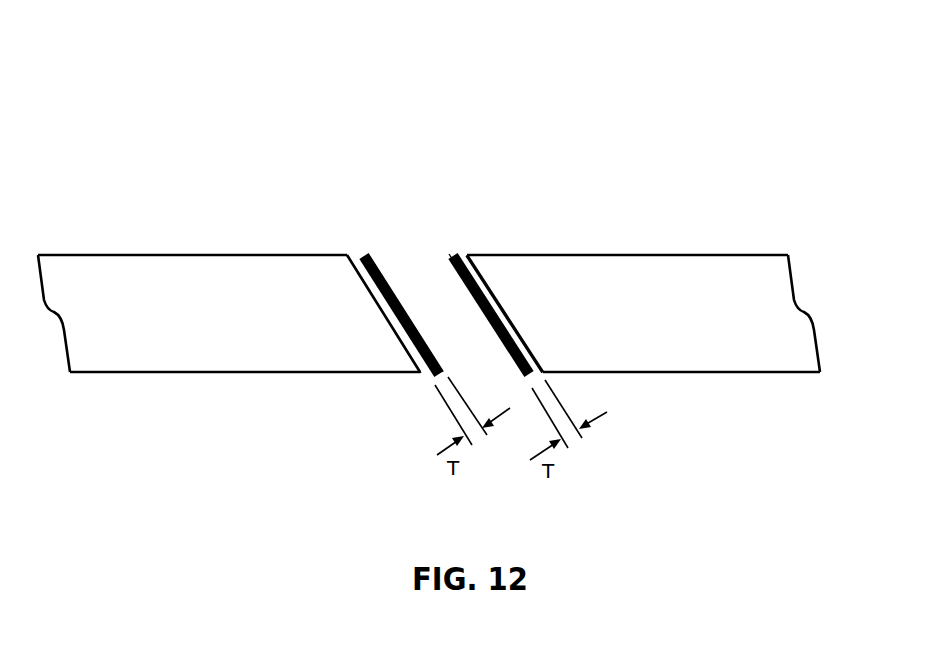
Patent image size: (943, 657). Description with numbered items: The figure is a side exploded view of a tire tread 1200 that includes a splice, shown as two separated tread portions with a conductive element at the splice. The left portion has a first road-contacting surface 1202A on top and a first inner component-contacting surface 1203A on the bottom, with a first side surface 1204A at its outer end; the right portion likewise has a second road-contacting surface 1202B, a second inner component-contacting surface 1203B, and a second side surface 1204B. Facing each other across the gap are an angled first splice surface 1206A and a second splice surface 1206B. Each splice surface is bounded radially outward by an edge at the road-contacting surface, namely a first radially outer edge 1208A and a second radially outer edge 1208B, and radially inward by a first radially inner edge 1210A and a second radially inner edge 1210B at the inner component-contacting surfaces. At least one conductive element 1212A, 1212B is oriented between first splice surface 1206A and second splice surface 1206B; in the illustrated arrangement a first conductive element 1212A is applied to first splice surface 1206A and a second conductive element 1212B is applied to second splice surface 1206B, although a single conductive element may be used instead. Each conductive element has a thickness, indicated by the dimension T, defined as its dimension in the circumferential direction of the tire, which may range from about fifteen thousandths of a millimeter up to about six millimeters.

The tire tread 1200 is at (693, 95).
The first road-contacting surface 1202A is at (187, 255).
The second road-contacting surface 1202B is at (715, 258).
The first inner component-contacting surface 1203A is at (180, 373).
The second inner component-contacting surface 1203B is at (770, 373).
The first side surface 1204A is at (92, 287).
The second side surface 1204B is at (628, 287).
The first splice surface 1206A is at (393, 335).
The second splice surface 1206B is at (507, 307).
The first radially outer edge 1208A is at (350, 257).
The second radially outer edge 1208B is at (473, 255).
The first radially inner edge 1210A is at (423, 370).
The second radially inner edge 1210B is at (563, 372).
The first conductive element 1212A is at (368, 255).
The second conductive element 1212B is at (457, 255).